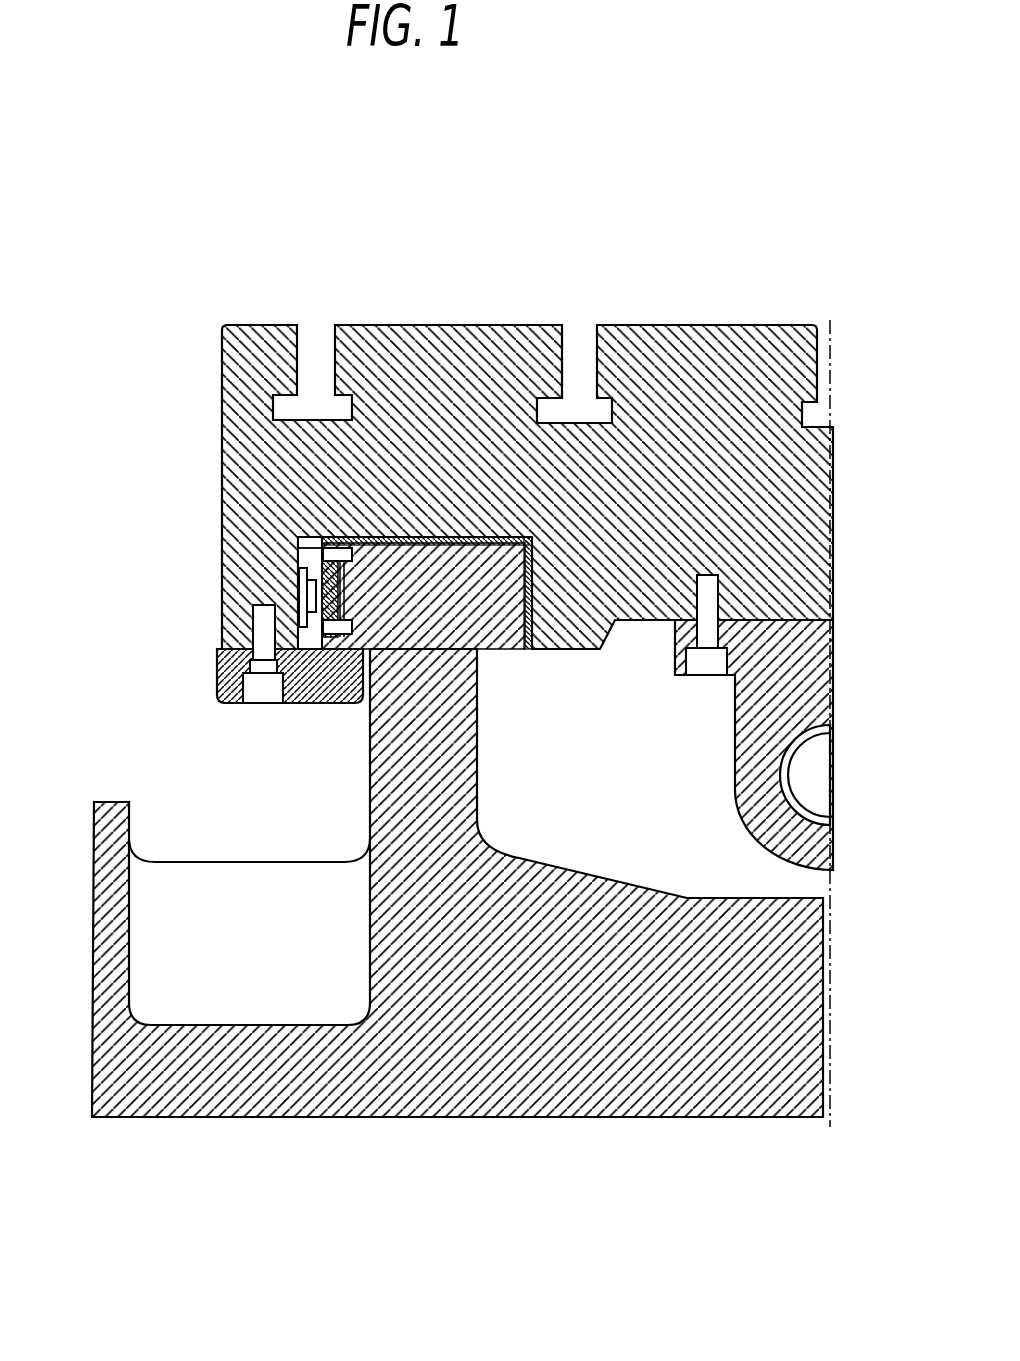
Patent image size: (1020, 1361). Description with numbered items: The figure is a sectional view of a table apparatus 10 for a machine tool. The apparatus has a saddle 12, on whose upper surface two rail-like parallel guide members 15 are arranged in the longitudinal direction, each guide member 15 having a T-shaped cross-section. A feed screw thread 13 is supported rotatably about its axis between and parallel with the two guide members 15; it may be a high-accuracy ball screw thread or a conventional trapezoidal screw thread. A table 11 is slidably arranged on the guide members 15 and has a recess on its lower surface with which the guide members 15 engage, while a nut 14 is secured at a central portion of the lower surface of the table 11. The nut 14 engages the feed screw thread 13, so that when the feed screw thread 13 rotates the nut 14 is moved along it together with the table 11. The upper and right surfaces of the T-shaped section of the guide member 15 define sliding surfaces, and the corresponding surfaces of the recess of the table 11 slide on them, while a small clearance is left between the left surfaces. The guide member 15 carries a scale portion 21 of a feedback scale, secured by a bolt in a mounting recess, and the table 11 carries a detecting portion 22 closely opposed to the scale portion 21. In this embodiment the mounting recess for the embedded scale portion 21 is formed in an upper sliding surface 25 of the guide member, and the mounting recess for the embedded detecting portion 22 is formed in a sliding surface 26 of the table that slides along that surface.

The table apparatus 10 is at (633, 307).
The table 11 is at (405, 368).
The saddle 12 is at (710, 1000).
The feed screw thread 13 is at (802, 790).
The nut 14 is at (792, 680).
The guide member 15 is at (503, 605).
The scale portion 21 is at (300, 557).
The detecting portion 22 is at (310, 600).
The upper sliding surface 25 is at (316, 553).
The sliding surface 26 is at (302, 639).